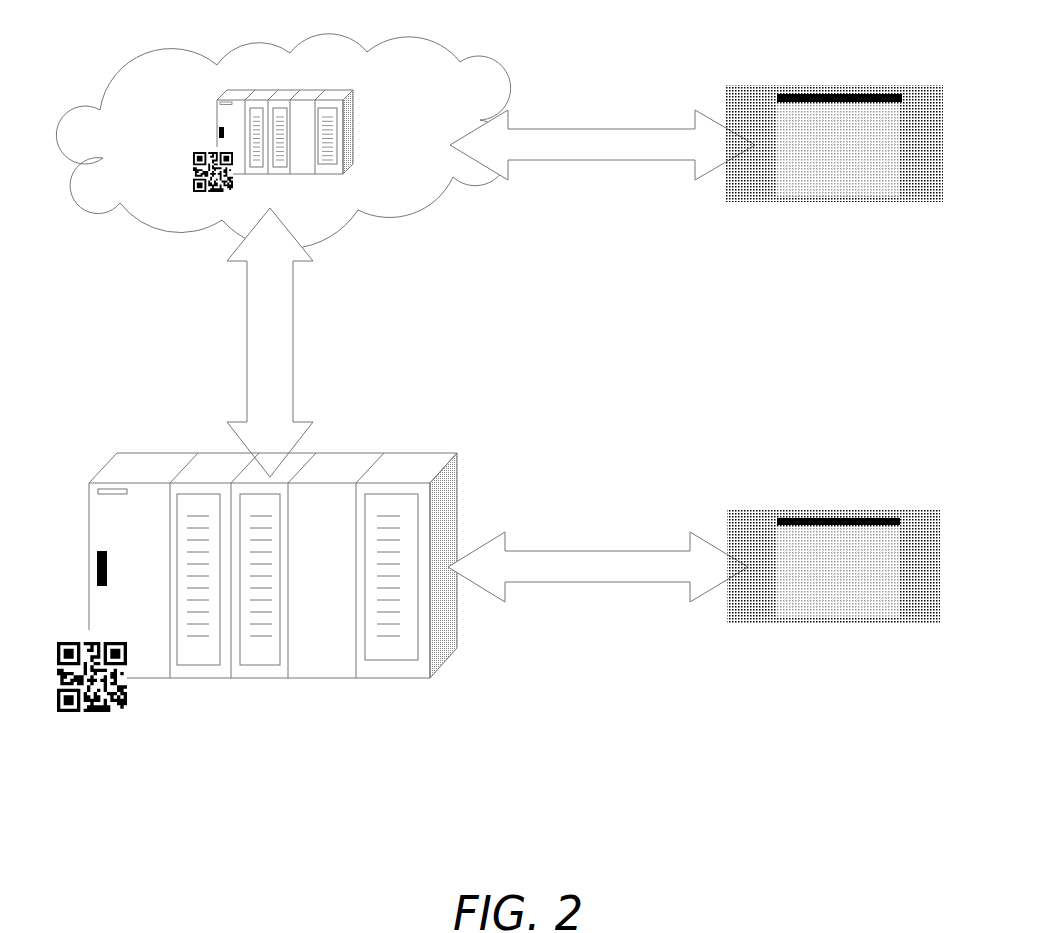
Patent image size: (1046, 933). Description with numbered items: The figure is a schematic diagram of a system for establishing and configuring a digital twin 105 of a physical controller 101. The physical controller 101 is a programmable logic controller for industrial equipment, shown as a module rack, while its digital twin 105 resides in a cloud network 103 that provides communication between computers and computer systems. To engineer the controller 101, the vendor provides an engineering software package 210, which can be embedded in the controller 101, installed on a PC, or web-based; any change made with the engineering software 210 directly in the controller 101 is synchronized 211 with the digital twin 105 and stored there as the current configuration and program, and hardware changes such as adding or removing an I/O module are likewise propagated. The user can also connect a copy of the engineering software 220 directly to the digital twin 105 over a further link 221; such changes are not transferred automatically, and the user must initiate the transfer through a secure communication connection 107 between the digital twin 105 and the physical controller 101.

The physical controller 101 is at (167, 453).
The cloud network 103 is at (147, 53).
The digital twin 105 is at (215, 118).
The secure communication connection 107 is at (247, 327).
The engineering software 210 is at (830, 508).
The synchronization 211 is at (615, 551).
The copy of the engineering software 220 is at (850, 85).
The communication link 2 221 is at (627, 130).